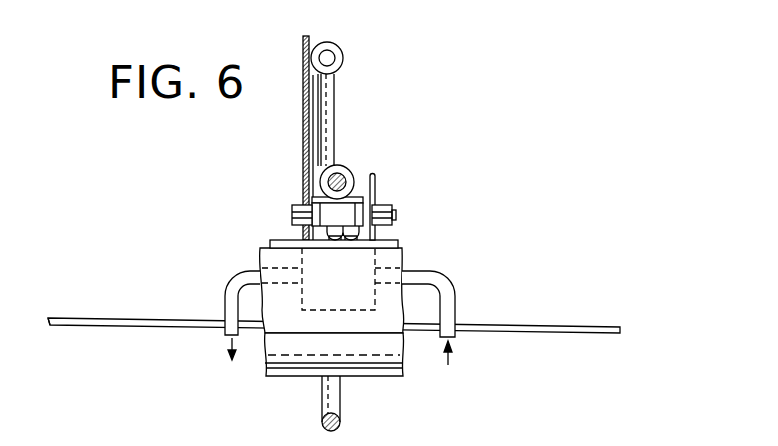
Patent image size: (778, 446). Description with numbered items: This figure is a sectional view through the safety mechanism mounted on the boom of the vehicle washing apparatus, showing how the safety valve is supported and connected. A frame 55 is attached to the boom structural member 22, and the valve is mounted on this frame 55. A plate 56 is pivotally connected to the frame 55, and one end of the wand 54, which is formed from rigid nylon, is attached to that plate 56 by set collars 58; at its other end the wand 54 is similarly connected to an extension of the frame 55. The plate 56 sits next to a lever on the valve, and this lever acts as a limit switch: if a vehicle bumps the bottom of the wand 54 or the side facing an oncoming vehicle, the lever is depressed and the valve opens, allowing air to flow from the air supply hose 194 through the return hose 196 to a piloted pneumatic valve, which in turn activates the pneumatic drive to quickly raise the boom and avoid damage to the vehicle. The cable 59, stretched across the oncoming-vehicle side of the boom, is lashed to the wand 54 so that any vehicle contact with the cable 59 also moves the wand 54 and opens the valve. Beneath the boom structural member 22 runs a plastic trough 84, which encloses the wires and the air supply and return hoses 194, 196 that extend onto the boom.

The boom structural member 22 is at (406, 257).
The wand 54 is at (331, 60).
The frame 55 is at (303, 141).
The plate 56 is at (376, 188).
The set collars 58 is at (343, 47).
The cable 59 is at (110, 318).
The plastic trough 84 is at (367, 368).
The air supply hose 194 is at (455, 298).
The return hose 196 is at (225, 302).